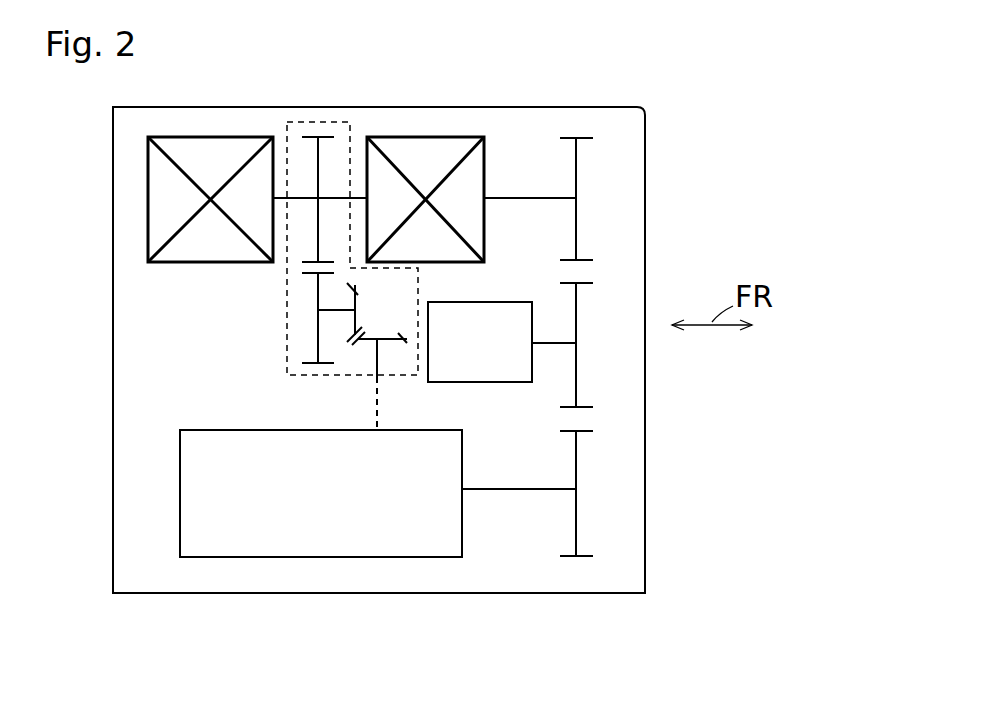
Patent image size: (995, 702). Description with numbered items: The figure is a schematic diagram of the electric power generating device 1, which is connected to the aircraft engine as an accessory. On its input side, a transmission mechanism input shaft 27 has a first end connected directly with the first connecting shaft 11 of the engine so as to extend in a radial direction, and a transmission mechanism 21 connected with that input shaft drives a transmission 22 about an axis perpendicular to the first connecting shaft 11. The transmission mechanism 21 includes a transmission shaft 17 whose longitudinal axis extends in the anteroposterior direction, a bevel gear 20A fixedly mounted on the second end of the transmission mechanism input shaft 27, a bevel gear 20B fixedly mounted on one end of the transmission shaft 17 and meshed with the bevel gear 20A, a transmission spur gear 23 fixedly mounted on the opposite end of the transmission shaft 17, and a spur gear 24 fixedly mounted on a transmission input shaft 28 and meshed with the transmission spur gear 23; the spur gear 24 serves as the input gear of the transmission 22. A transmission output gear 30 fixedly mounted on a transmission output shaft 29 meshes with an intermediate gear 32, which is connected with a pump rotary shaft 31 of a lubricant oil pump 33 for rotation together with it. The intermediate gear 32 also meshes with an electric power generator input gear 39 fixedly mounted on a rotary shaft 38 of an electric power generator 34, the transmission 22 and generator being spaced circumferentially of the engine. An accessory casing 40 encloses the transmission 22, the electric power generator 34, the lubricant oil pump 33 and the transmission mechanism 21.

The electric power generating device 1 is at (522, 102).
The first connecting shaft 11 is at (373, 405).
The transmission shaft 17 is at (320, 313).
The bevel gear 20A is at (385, 337).
The bevel gear 20B is at (357, 313).
The transmission mechanism 21 is at (280, 311).
The transmission 22 is at (405, 130).
The transmission spur gear 23 is at (317, 293).
The spur gear 24 is at (314, 173).
The transmission mechanism input shaft 27 is at (377, 357).
The transmission input shaft 28 is at (334, 197).
The transmission output shaft 29 is at (531, 197).
The transmission output gear 30 is at (577, 177).
The pump rotary shaft 31 is at (553, 343).
The intermediate gear 32 is at (578, 373).
The lubricant oil pump 33 is at (503, 382).
The electric power generator 34 is at (180, 503).
The rotary shaft 38 is at (511, 492).
The electric power generator input gear 39 is at (578, 520).
The accessory casing 40 is at (644, 107).